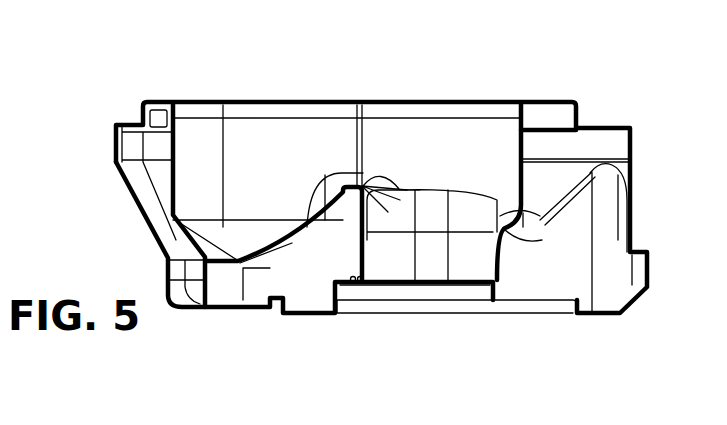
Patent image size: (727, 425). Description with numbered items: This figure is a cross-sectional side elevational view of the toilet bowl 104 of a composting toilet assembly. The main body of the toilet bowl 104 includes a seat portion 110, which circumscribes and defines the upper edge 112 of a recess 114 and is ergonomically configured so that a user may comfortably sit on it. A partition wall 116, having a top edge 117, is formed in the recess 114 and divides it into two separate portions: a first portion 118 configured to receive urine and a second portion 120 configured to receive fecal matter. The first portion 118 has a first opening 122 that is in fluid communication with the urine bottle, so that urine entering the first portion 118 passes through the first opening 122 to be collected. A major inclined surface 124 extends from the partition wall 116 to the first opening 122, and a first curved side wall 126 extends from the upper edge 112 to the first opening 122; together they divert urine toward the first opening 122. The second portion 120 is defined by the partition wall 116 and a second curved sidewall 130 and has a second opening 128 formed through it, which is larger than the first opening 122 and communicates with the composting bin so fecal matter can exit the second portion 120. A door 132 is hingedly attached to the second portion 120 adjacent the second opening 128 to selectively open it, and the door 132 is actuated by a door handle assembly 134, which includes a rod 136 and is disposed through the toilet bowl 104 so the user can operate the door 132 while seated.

The toilet bowl 104 is at (636, 87).
The seat portion 110 is at (507, 101).
The upper edge 112 is at (357, 103).
The recess 114 is at (282, 143).
The partition wall 116 is at (363, 188).
The top edge 117 is at (353, 185).
The first portion 118 is at (213, 157).
The second portion 120 is at (483, 160).
The first opening 122 is at (207, 308).
The major inclined surface 124 is at (318, 228).
The first curved side wall 126 is at (203, 240).
The second opening 128 is at (493, 284).
The second curved sidewall 130 is at (500, 216).
The door 132 is at (433, 284).
The door handle assembly 134 is at (367, 283).
The rod 136 is at (360, 279).